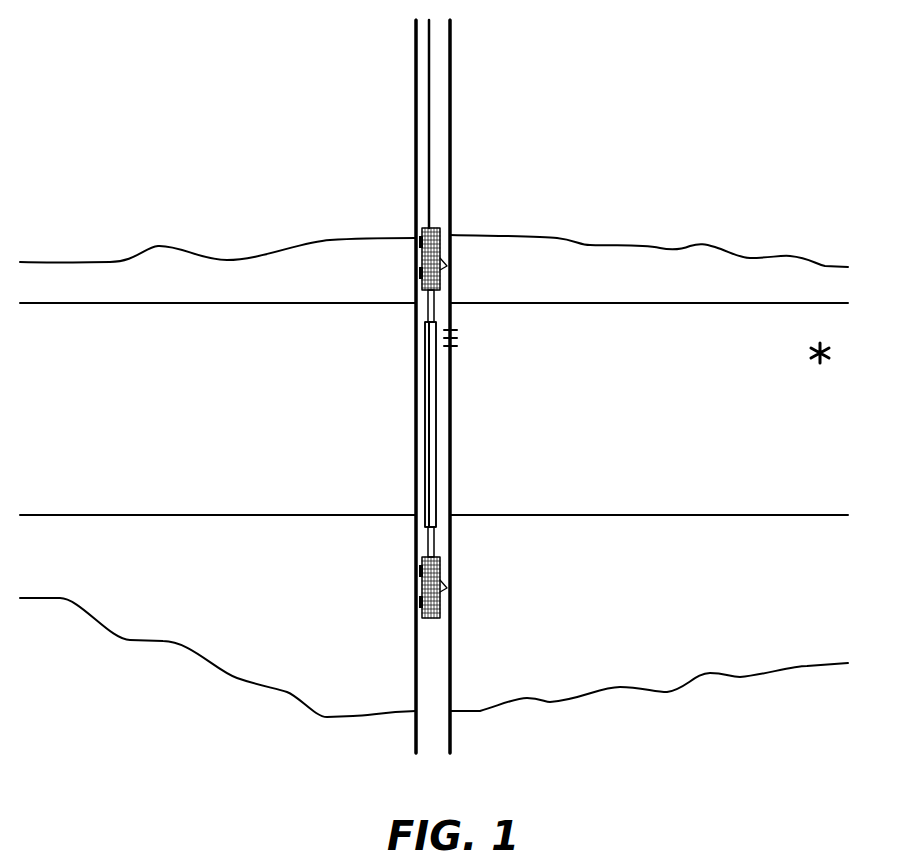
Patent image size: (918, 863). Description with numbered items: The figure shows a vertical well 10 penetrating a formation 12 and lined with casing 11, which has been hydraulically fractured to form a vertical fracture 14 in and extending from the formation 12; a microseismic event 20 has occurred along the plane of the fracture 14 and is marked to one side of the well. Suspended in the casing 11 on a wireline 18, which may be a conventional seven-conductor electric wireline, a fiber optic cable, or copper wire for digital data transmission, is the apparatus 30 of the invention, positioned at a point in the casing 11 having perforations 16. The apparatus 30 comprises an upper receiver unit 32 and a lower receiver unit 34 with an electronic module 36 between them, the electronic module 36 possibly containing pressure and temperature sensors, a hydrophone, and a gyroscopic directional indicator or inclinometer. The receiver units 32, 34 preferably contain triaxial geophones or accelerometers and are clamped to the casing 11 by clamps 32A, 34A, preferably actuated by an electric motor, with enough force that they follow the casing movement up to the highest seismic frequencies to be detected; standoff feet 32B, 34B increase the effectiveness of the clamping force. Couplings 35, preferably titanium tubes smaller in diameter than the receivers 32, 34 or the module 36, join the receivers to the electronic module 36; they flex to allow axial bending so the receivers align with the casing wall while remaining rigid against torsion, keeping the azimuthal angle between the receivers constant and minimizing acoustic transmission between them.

The well 10 is at (466, 81).
The casing 11 is at (451, 148).
The formation 12 is at (434, 409).
The vertical fracture 14 is at (241, 681).
The perforations 16 is at (457, 330).
The wireline 18 is at (429, 187).
The microseismic event 20 is at (815, 345).
The apparatus 30 is at (411, 378).
The receiver unit 32 is at (441, 229).
The clamp 32A is at (442, 267).
The standoff foot 32B is at (420, 276).
The receiver unit 34 is at (441, 611).
The clamp 34A is at (442, 589).
The standoff foot 34B is at (420, 605).
The coupling 35 is at (435, 305).
The electronic module 36 is at (437, 437).